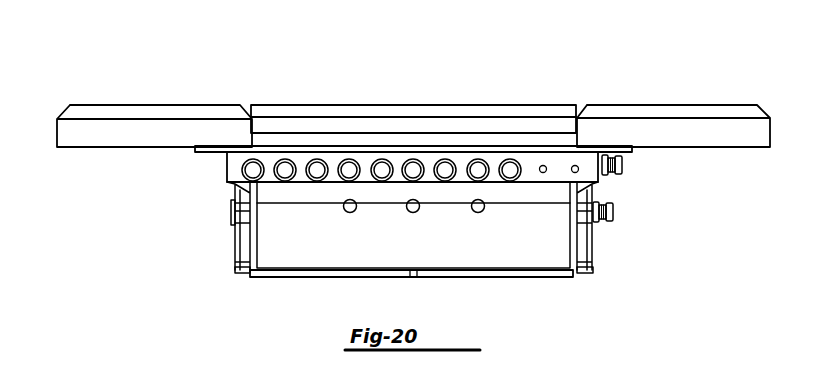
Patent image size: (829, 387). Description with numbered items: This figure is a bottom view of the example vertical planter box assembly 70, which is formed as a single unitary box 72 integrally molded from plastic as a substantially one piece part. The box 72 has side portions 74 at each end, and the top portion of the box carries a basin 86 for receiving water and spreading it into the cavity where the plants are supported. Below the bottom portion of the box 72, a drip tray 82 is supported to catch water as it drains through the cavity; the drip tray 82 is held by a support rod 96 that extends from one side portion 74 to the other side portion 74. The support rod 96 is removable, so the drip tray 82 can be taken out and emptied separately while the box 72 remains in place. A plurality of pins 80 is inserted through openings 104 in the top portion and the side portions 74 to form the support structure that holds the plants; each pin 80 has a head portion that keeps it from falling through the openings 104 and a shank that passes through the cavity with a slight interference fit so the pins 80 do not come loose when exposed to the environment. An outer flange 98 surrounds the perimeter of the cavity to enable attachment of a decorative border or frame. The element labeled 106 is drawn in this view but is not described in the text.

The vertical planter box assembly 70 is at (227, 63).
The box 72 is at (520, 299).
The side portions 74 is at (240, 251).
The pins 80 is at (382, 168).
The drip tray 82 is at (592, 270).
The basin 86 is at (551, 253).
The support rod 96 is at (613, 211).
The outer flange 98 is at (634, 148).
The openings 104 is at (575, 166).
The top member 106 is at (688, 125).